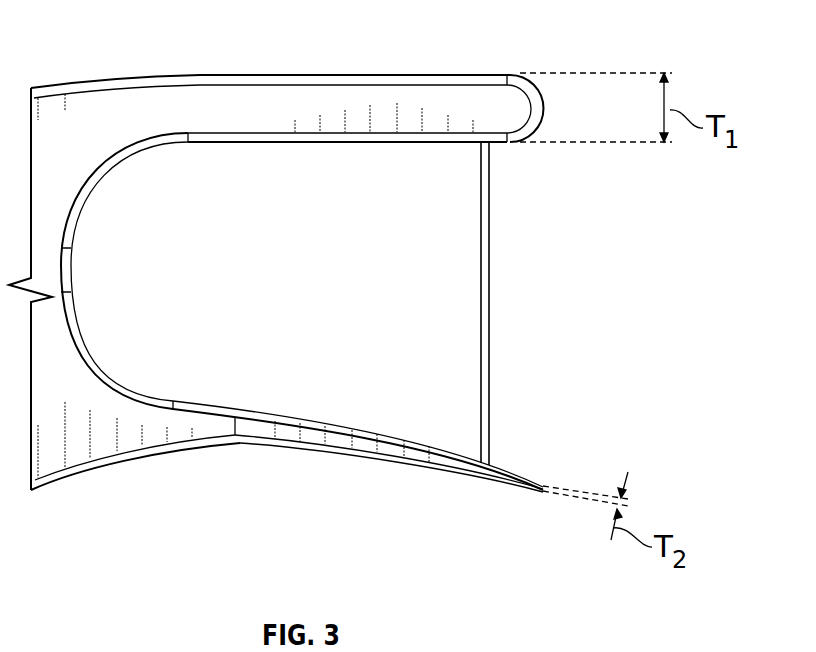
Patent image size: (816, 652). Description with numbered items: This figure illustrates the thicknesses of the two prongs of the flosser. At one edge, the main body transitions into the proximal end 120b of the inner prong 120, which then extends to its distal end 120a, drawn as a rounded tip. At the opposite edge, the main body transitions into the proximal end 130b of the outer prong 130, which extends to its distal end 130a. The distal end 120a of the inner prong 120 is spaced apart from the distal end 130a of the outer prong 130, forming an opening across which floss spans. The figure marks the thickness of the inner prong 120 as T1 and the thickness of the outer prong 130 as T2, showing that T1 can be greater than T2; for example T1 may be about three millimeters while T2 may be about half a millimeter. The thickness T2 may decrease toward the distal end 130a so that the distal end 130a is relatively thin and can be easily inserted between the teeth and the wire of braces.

The inner prong 120 is at (300, 100).
The distal end of inner prong 120a is at (541, 98).
The proximal end of inner prong 120b is at (140, 77).
The outer prong 130 is at (340, 446).
The distal end of outer prong 130a is at (545, 487).
The proximal end of outer prong 130b is at (131, 467).